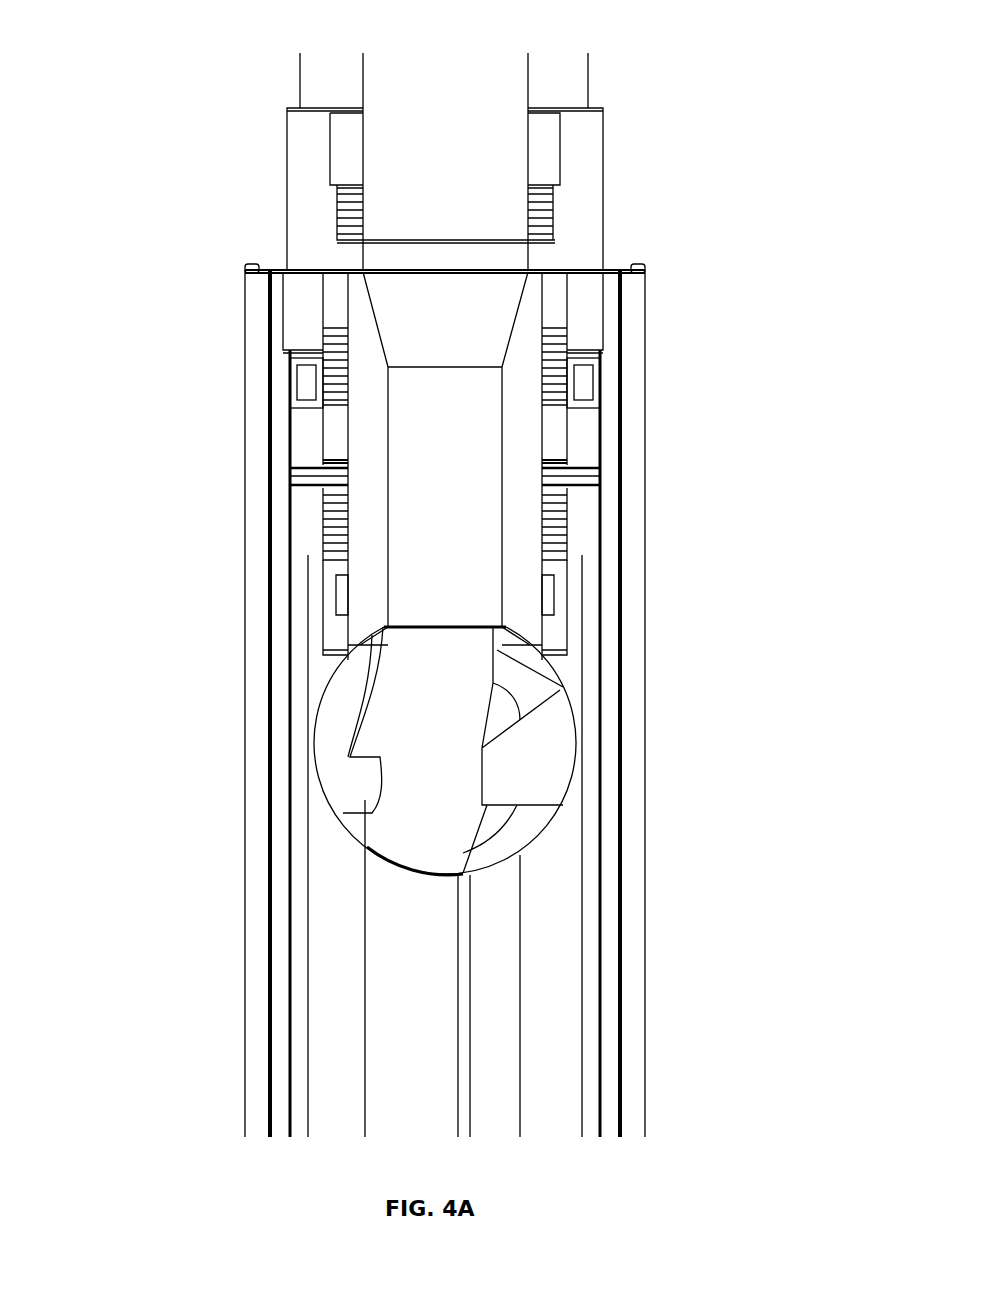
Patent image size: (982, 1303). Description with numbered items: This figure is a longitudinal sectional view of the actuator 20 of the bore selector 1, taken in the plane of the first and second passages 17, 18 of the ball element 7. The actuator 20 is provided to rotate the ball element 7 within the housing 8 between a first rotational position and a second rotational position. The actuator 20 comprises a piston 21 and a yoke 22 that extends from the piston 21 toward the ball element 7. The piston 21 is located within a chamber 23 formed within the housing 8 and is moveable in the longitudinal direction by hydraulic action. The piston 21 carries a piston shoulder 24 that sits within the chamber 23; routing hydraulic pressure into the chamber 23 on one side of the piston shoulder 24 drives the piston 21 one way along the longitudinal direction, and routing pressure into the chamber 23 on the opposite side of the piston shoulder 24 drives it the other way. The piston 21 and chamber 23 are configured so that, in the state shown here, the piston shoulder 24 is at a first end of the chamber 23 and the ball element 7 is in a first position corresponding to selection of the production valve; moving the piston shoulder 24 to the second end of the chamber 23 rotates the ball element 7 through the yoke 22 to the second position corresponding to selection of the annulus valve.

The bore selector 1 is at (140, 208).
The ball element 7 is at (330, 738).
The housing 8 is at (257, 988).
The first passage 17 is at (415, 685).
The second passage 18 is at (510, 765).
The actuator 20 is at (692, 557).
The piston 21 is at (333, 523).
The yoke 22 is at (330, 638).
The chamber 23 is at (303, 437).
The piston shoulder 24 is at (305, 478).